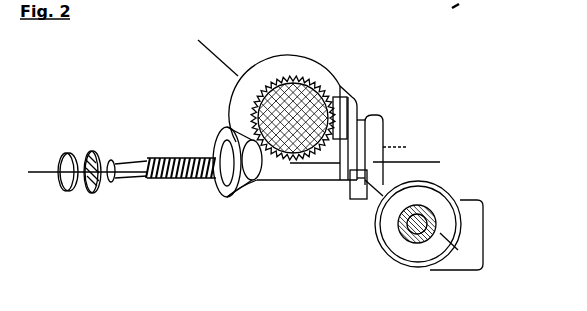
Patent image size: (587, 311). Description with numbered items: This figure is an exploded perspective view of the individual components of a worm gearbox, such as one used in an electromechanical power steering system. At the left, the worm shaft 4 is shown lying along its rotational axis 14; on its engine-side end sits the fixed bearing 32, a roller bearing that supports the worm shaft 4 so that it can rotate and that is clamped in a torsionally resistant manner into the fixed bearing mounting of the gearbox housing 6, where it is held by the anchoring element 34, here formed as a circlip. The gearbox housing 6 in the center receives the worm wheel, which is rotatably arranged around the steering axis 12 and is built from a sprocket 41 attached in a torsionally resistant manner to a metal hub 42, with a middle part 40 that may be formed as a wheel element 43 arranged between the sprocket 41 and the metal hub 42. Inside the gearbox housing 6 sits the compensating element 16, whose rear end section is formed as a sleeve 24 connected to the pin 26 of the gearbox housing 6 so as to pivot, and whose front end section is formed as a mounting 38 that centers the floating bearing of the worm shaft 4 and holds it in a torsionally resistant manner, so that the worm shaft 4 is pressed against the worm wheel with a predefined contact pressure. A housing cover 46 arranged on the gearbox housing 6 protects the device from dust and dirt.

The worm shaft 4 is at (167, 180).
The gearbox housing 6 is at (246, 183).
The steering axis 12 is at (202, 37).
The rotational axis 14 is at (40, 160).
The compensating element 16 is at (389, 107).
The sleeve 24 is at (383, 132).
The pin 26 is at (348, 96).
The fixed bearing 32 is at (97, 195).
The anchoring element 34 is at (71, 193).
The mounting 38 is at (360, 183).
The middle part 40 is at (252, 112).
The sprocket 41 is at (305, 77).
The metal hub 42 is at (289, 76).
The wheel element 43 is at (331, 80).
The housing cover 46 is at (393, 238).